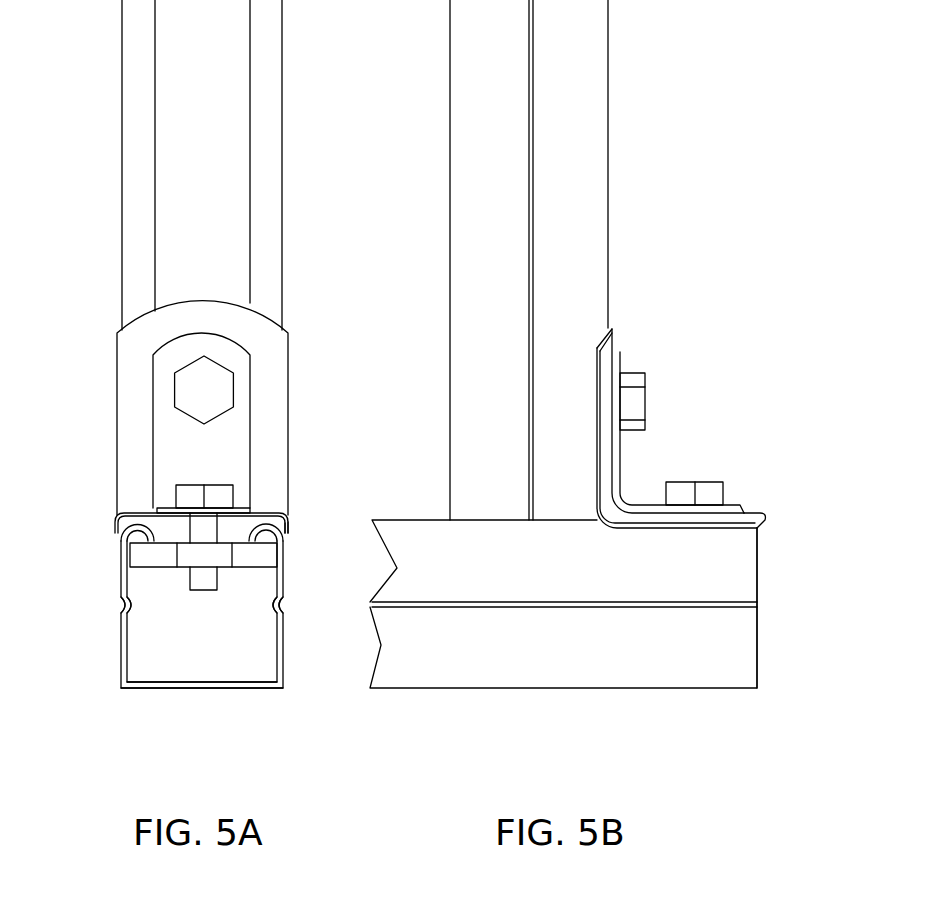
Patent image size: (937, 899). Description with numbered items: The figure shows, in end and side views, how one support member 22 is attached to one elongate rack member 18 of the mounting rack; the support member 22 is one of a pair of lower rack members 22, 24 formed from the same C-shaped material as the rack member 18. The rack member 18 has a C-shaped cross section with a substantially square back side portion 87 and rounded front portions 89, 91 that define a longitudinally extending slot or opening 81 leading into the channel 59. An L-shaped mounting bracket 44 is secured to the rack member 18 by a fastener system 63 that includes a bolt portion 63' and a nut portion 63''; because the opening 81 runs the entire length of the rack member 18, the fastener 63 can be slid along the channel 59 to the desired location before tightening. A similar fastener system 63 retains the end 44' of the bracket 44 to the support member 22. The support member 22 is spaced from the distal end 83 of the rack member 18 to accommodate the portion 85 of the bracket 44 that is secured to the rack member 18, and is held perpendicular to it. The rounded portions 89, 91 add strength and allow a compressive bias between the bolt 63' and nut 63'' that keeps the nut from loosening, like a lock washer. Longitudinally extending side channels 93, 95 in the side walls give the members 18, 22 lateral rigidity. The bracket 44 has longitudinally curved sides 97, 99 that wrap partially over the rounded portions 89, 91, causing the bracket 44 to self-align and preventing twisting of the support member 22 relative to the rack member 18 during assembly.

In FIG. 5A, the elongate rack member 18 is at (120, 658).
In FIG. 5B, the elongate rack member 18 is at (551, 667).
In FIG. 5A, the support member 22 is at (282, 52).
In FIG. 5B, the support member 22 is at (606, 32).
In FIG. 5B, the lower rack member 24 is at (567, 612).
In FIG. 5A, the L-shaped mounting bracket 44 is at (173, 408).
In FIG. 5B, the L-shaped mounting bracket 44 is at (676, 421).
In FIG. 5A, the end of L-shaped bracket 44' is at (262, 346).
In FIG. 5A, the C-shaped channel 59 is at (202, 662).
In FIG. 5A, the fastener system 63 is at (208, 424).
In FIG. 5B, the fastener system 63 is at (696, 405).
In FIG. 5A, the bolt portion 63' is at (275, 452).
In FIG. 5A, the nut portion 63'' is at (247, 572).
In FIG. 5A, the elongate opening 81 is at (225, 540).
In FIG. 5B, the distal end 83 is at (758, 647).
In FIG. 5B, the portion of L-shaped bracket 85 is at (664, 520).
In FIG. 5A, the back side portion 87 is at (168, 688).
In FIG. 5A, the rounded front portion 89 is at (118, 523).
In FIG. 5A, the rounded front portion 91 is at (289, 521).
In FIG. 5A, the side channel 93 is at (120, 605).
In FIG. 5B, the side channel 93 is at (533, 130).
In FIG. 5A, the side channel 95 is at (283, 610).
In FIG. 5A, the curved side 97 is at (132, 515).
In FIG. 5B, the curved side 97 is at (603, 423).
In FIG. 5A, the curved side 99 is at (281, 514).